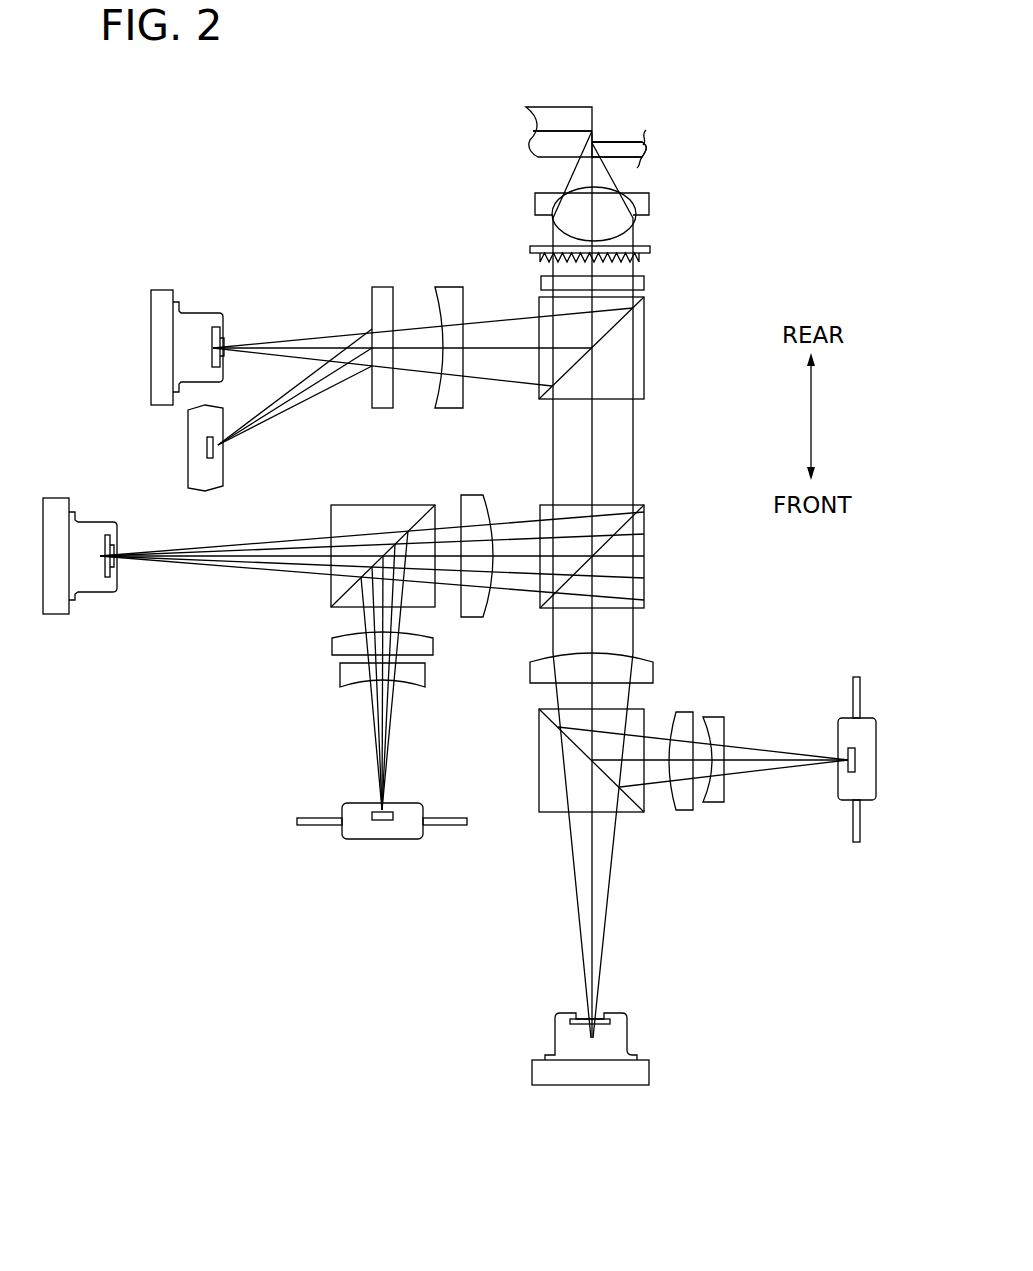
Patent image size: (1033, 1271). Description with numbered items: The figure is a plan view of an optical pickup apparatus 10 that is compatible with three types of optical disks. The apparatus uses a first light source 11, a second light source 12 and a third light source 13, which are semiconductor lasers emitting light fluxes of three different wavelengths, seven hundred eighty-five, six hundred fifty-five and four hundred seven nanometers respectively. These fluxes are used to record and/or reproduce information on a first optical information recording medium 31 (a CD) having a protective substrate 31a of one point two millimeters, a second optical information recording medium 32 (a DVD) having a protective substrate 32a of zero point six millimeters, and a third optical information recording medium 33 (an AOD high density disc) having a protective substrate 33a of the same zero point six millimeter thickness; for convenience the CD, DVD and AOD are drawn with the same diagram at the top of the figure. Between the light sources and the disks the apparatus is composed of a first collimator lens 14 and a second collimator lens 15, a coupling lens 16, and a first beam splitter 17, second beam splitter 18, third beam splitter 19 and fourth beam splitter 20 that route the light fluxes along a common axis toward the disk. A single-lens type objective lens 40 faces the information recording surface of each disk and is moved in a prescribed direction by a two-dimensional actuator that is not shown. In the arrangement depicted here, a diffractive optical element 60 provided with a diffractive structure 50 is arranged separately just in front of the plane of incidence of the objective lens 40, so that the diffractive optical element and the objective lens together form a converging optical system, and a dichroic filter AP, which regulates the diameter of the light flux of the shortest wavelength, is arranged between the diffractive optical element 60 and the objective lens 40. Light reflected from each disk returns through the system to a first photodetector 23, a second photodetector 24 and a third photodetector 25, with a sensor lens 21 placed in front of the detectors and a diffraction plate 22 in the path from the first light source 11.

The optical pickup apparatus 10 is at (790, 140).
The first light source 11 is at (205, 313).
The second light source 12 is at (95, 518).
The third light source 13 is at (628, 1042).
The first collimator lens 14 is at (653, 672).
The second collimator lens 15 is at (470, 495).
The coupling lens 16 is at (448, 286).
The first beam splitter 17 is at (539, 760).
The second beam splitter 18 is at (381, 505).
The third beam splitter 19 is at (645, 556).
The fourth beam splitter 20 is at (645, 345).
The sensor lens 21 is at (324, 630).
The diffraction plate 22 is at (383, 286).
The first photodetector 23 is at (224, 473).
The second photodetector 24 is at (382, 840).
The third photodetector 25 is at (838, 790).
The first optical information recording medium 31 is at (506, 119).
The protective substrate 31a is at (567, 143).
The second optical information recording medium 32 is at (662, 148).
The third optical information recording medium 33 is at (687, 156).
The protective substrate 32a is at (613, 148).
The protective substrate 33a is at (637, 111).
The objective lens 40 is at (650, 206).
The diffractive structure 50 is at (650, 262).
The diffractive optical element 60 is at (655, 244).
The dichroic filter AP is at (645, 283).